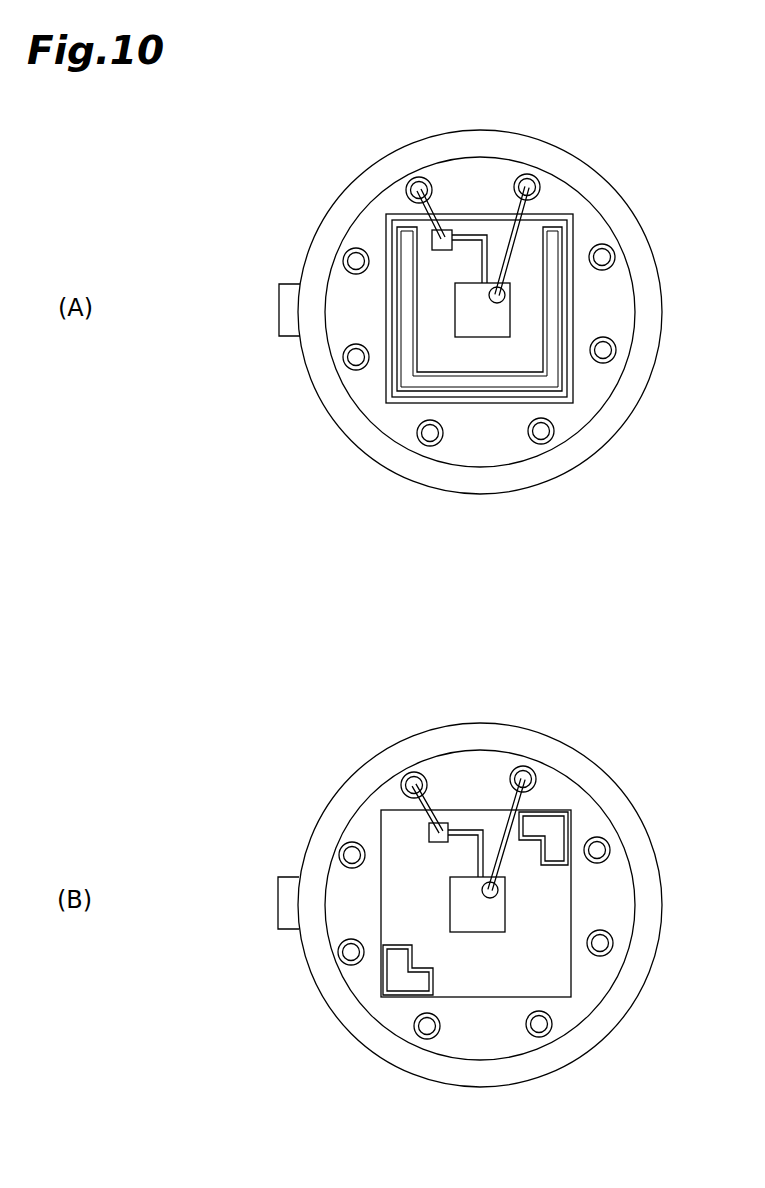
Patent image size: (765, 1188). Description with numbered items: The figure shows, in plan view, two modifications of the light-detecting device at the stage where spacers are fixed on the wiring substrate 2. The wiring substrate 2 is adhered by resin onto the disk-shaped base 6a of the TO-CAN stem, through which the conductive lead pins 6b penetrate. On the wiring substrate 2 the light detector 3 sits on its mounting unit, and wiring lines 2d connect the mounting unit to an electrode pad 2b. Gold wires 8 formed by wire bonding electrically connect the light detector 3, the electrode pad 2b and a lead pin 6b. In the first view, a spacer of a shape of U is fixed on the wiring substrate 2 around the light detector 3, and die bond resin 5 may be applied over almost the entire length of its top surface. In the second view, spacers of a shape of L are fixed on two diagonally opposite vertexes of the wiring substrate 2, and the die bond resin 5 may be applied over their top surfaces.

The wiring substrate 2 is at (558, 222).
The electrode pad 2b is at (452, 232).
The wiring line 2d is at (484, 258).
The light detector 3 is at (497, 318).
The die bond resin 5 is at (555, 297).
The base 6a is at (615, 227).
The lead pin 6b is at (407, 188).
The wire 8 is at (430, 200).